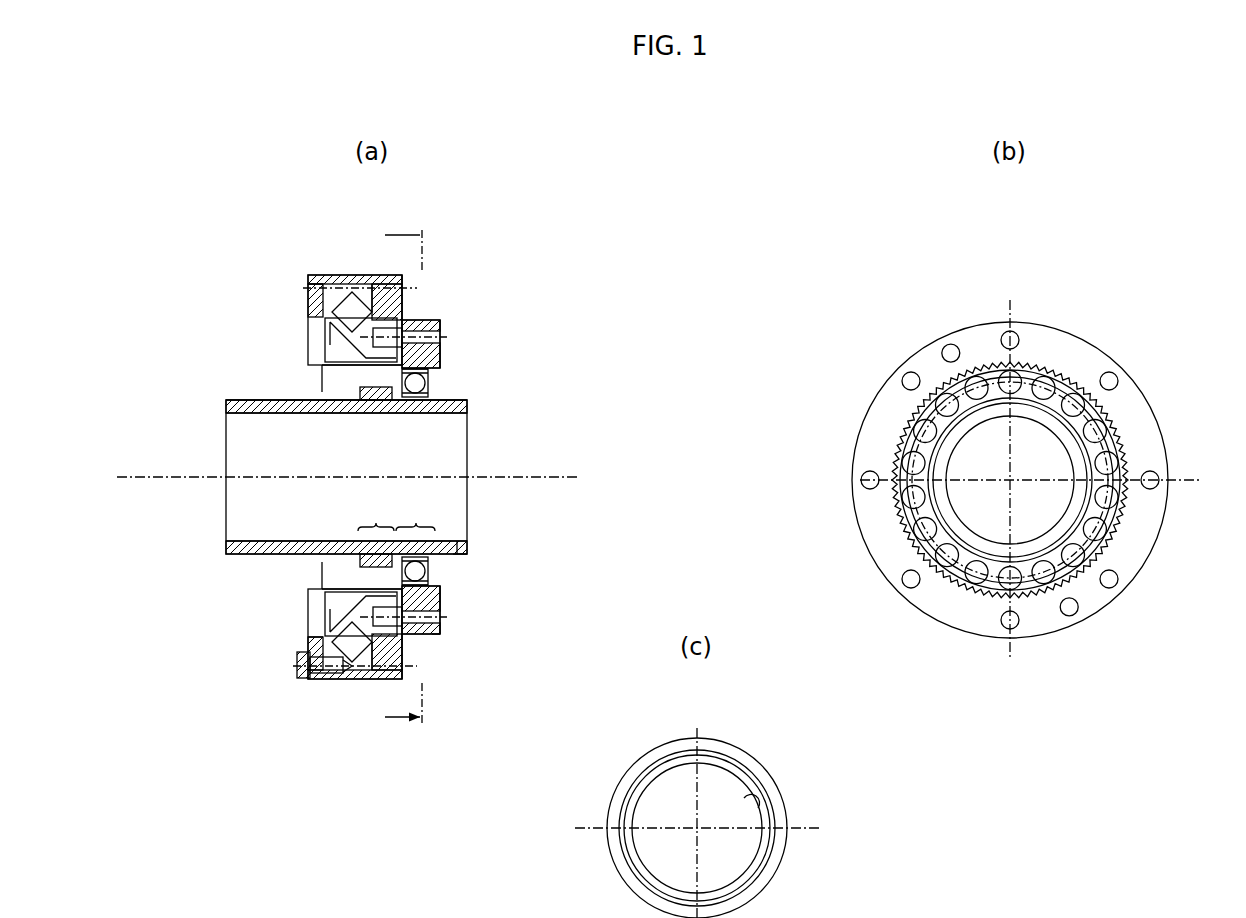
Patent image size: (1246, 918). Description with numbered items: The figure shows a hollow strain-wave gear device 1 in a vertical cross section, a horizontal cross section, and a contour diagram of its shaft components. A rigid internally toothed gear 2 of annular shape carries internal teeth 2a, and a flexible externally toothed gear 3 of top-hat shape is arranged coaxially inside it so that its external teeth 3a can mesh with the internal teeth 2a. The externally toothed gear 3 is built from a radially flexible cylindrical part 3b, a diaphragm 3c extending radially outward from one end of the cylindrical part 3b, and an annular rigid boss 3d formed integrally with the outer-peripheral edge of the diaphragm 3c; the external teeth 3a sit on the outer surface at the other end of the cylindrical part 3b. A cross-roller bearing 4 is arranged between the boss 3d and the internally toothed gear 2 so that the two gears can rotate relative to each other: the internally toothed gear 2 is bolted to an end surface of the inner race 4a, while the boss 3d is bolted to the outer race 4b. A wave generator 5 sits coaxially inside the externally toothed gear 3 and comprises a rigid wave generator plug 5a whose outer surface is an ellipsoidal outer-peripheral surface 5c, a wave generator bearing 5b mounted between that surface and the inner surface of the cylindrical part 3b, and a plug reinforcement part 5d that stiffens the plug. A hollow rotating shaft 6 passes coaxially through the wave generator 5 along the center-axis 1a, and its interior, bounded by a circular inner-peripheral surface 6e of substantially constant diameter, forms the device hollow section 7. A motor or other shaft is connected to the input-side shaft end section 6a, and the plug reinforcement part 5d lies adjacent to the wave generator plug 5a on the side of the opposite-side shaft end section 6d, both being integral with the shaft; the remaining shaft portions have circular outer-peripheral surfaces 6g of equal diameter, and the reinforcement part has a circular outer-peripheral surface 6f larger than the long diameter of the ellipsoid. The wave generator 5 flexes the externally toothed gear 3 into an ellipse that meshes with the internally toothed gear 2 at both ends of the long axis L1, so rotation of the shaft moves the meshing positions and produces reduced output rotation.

The hollow strain-wave gear device 1 is at (503, 308).
The center-axis 1a is at (577, 483).
The rigid internally toothed gear 2 is at (771, 478).
The internal teeth 2a is at (441, 370).
The flexible externally toothed gear 3 is at (708, 477).
The external teeth 3a is at (398, 362).
The cylindrical part 3b is at (347, 368).
The diaphragm 3c is at (328, 342).
The rigid boss 3d is at (310, 305).
The cross-roller bearing 4 is at (320, 452).
The inner race 4a is at (372, 316).
The outer race 4b is at (348, 290).
The wave generator 5 is at (738, 563).
The wave generator plug 5a is at (938, 548).
The wave generator bearing 5b is at (436, 384).
The ellipsoidal outer-peripheral surface 5c is at (438, 567).
The plug reinforcement part 5d is at (376, 515).
The hollow rotating shaft 6 is at (622, 650).
The shaft end section 6a is at (470, 405).
The opposite-side shaft end section 6d is at (226, 402).
The circular inner-peripheral surface 6e is at (457, 540).
The circular outer-peripheral surface 6f is at (432, 634).
The circular outer-peripheral surfaces 6g is at (453, 557).
The device hollow section 7 is at (337, 461).
The long axis L1 is at (1006, 290).